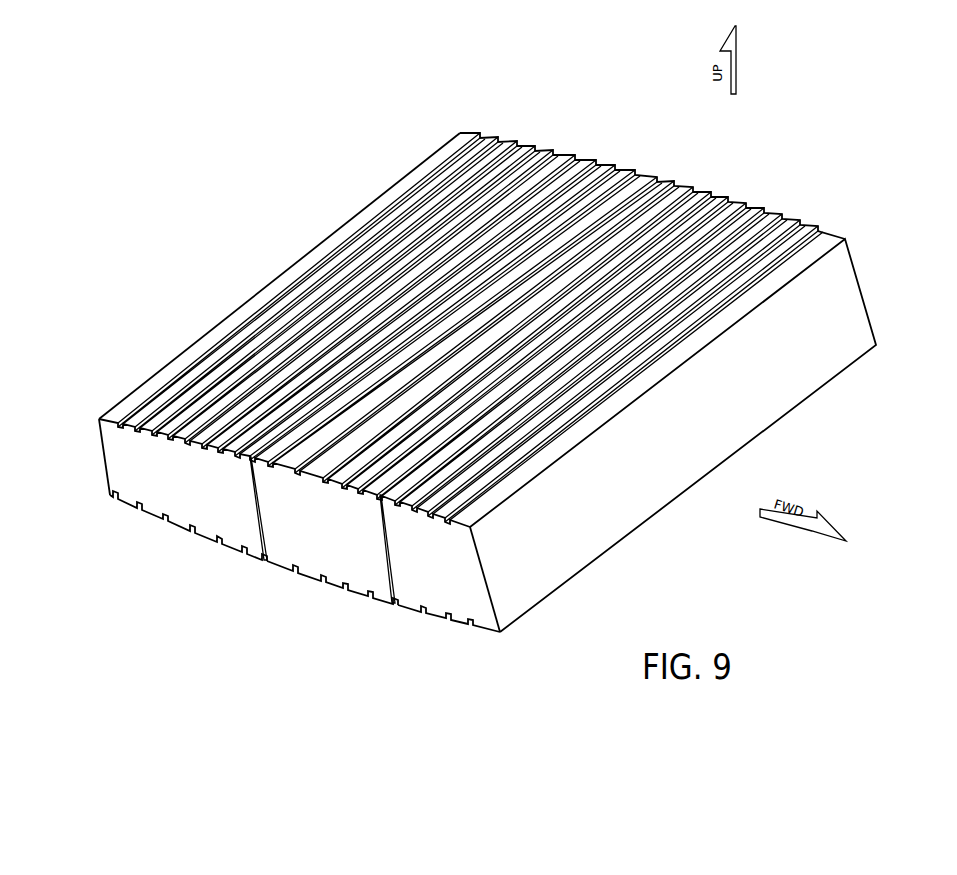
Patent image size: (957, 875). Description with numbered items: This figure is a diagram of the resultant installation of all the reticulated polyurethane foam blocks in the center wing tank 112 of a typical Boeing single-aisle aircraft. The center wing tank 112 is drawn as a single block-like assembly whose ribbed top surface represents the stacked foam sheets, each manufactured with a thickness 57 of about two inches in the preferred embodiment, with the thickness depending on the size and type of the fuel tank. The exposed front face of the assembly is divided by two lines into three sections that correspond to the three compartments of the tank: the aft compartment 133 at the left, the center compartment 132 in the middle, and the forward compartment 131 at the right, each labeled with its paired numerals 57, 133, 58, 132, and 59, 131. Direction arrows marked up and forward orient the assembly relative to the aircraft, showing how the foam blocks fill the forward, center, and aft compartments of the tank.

The center wing tank 112 is at (297, 164).
The thickness 57 is at (151, 449).
The aft compartment 133 is at (115, 468).
The second core segment 58 is at (320, 591).
The center compartment 132 is at (323, 552).
The third core segment 59 is at (449, 637).
The forward compartment 131 is at (447, 598).